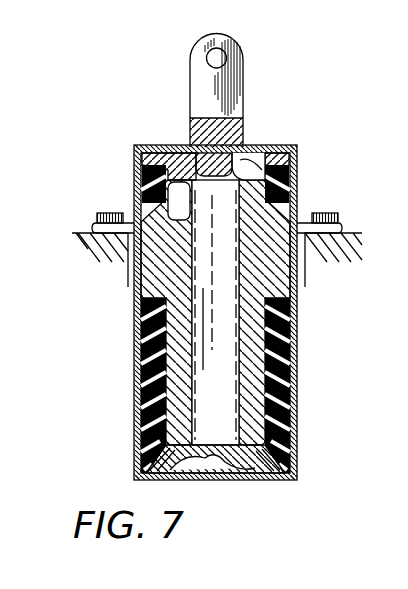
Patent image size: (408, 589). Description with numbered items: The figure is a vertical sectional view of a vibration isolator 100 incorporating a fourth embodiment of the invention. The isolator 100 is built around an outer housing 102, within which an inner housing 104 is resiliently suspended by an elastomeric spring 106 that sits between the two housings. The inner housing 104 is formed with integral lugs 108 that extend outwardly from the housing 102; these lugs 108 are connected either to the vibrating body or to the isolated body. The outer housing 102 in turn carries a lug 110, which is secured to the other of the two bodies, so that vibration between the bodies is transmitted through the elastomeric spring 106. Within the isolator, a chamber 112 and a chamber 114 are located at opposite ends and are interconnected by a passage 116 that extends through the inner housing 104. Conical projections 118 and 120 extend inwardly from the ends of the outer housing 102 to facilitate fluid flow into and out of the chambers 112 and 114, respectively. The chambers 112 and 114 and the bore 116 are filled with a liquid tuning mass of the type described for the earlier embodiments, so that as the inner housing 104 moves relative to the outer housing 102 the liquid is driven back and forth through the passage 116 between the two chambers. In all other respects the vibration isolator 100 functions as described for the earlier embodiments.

The vibration isolator 100 is at (100, 129).
The outer housing 102 is at (134, 437).
The inner housing 104 is at (175, 372).
The elastomeric spring 106 is at (152, 338).
The integral lugs 108 is at (93, 224).
The lug 110 is at (197, 67).
The chamber 112 is at (252, 163).
The chamber 114 is at (250, 463).
The passage 116 is at (231, 283).
The conical projection 118 is at (205, 165).
The conical projection 120 is at (162, 481).